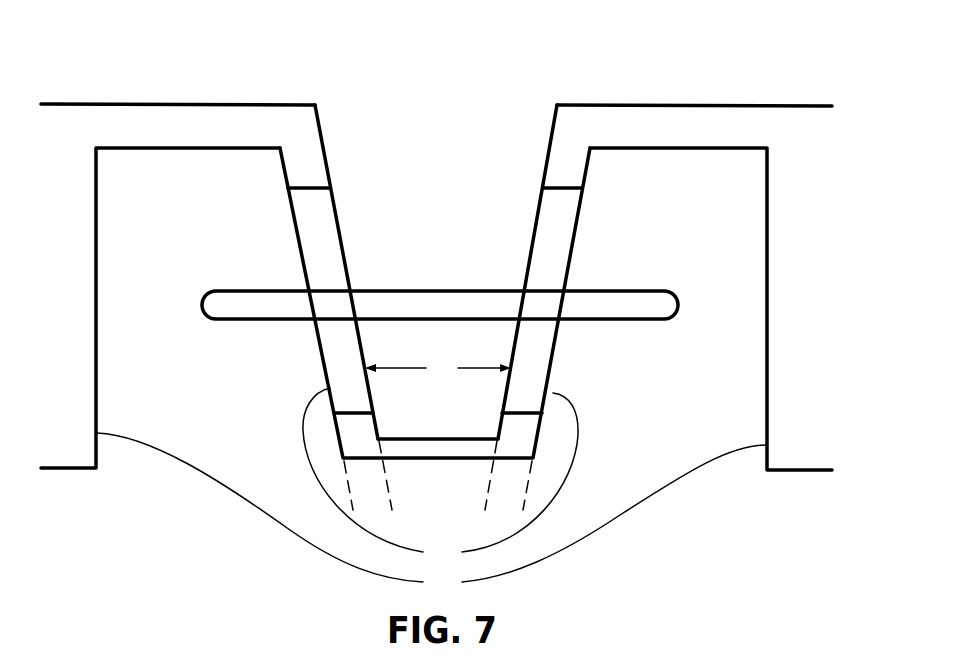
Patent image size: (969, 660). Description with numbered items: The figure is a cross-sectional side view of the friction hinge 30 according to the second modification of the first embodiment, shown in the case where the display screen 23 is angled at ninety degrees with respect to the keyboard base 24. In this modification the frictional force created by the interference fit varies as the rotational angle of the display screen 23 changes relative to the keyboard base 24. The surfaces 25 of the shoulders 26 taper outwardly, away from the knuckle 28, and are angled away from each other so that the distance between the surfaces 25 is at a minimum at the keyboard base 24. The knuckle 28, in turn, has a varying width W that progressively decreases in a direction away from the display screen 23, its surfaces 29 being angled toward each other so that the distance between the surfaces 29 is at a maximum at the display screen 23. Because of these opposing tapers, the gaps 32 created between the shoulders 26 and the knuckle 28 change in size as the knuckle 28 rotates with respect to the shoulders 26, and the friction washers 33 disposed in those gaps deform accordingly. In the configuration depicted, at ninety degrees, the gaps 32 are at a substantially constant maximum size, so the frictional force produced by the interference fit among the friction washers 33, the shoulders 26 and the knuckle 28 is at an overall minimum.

The hinge 30 is at (809, 84).
The display screen 23 is at (200, 104).
The keyboard base 24 is at (789, 472).
The friction washers 33 is at (322, 228).
The surfaces of knuckle 29 is at (348, 268).
The knuckle 28 is at (416, 438).
The gaps 32 is at (507, 490).
The surfaces of shoulders 25 is at (440, 477).
The shoulders 26 is at (432, 515).